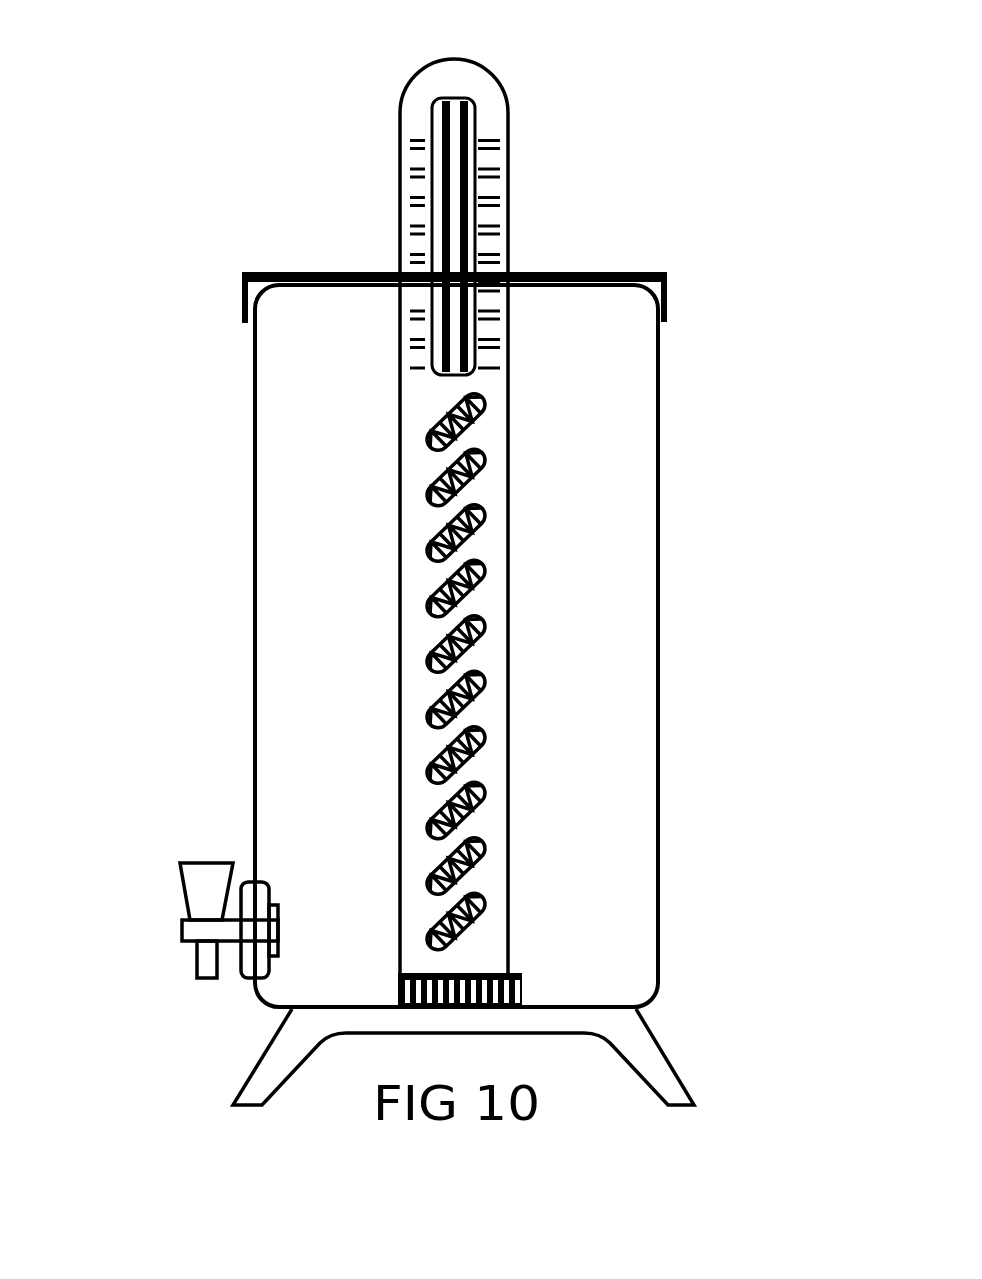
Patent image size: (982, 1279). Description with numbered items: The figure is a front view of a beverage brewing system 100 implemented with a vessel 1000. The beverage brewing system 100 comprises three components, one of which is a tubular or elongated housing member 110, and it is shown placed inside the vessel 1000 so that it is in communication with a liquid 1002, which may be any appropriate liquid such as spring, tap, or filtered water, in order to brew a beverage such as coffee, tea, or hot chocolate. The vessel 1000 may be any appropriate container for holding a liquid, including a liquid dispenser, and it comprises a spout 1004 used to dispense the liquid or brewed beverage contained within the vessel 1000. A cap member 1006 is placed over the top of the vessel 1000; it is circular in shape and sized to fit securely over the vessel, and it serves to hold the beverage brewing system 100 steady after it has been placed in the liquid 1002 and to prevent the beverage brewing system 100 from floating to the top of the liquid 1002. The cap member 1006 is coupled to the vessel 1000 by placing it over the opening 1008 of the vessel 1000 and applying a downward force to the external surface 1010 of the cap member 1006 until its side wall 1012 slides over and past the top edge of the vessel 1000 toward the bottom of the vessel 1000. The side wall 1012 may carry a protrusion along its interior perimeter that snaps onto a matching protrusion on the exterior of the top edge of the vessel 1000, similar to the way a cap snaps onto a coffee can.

The beverage brewing system 100 is at (348, 122).
The elongated housing member 110 is at (510, 100).
The vessel 1000 is at (660, 510).
The liquid 1002 is at (617, 724).
The spout 1004 is at (198, 960).
The cap member 1006 is at (315, 272).
The opening 1008 is at (652, 272).
The external surface 1010 is at (559, 272).
The side wall 1012 is at (243, 299).